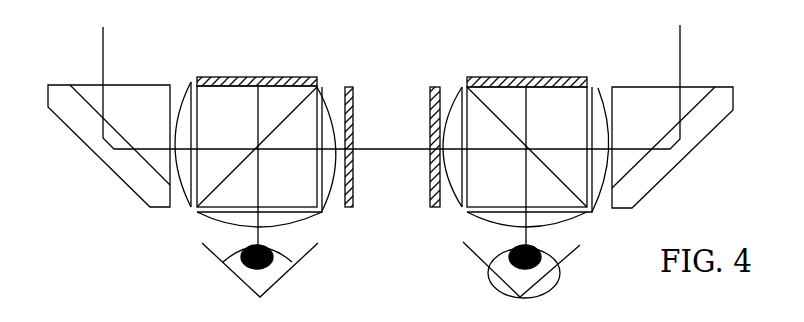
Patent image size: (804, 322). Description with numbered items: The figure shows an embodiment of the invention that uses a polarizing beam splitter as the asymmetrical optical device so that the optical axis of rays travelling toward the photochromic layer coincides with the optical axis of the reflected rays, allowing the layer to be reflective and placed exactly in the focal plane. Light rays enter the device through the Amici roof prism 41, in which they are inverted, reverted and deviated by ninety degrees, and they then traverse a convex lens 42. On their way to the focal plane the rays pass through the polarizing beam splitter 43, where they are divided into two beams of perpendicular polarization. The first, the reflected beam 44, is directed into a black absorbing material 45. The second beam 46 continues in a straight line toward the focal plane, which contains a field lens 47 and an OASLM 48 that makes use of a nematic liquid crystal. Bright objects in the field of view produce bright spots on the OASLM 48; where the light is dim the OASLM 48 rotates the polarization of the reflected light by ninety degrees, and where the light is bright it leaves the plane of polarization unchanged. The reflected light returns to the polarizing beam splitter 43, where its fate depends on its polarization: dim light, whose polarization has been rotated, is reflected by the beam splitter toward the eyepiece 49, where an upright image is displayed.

The Amici roof prism 41 is at (678, 167).
The convex lens 42 is at (599, 88).
The polarizing beam splitter 43 is at (516, 132).
The reflected beam 44 is at (526, 113).
The black absorbing material 45 is at (520, 77).
The second beam 46 is at (489, 149).
The field lens 47 is at (453, 87).
The OASLM 48 is at (436, 87).
The eyepiece 49 is at (473, 213).